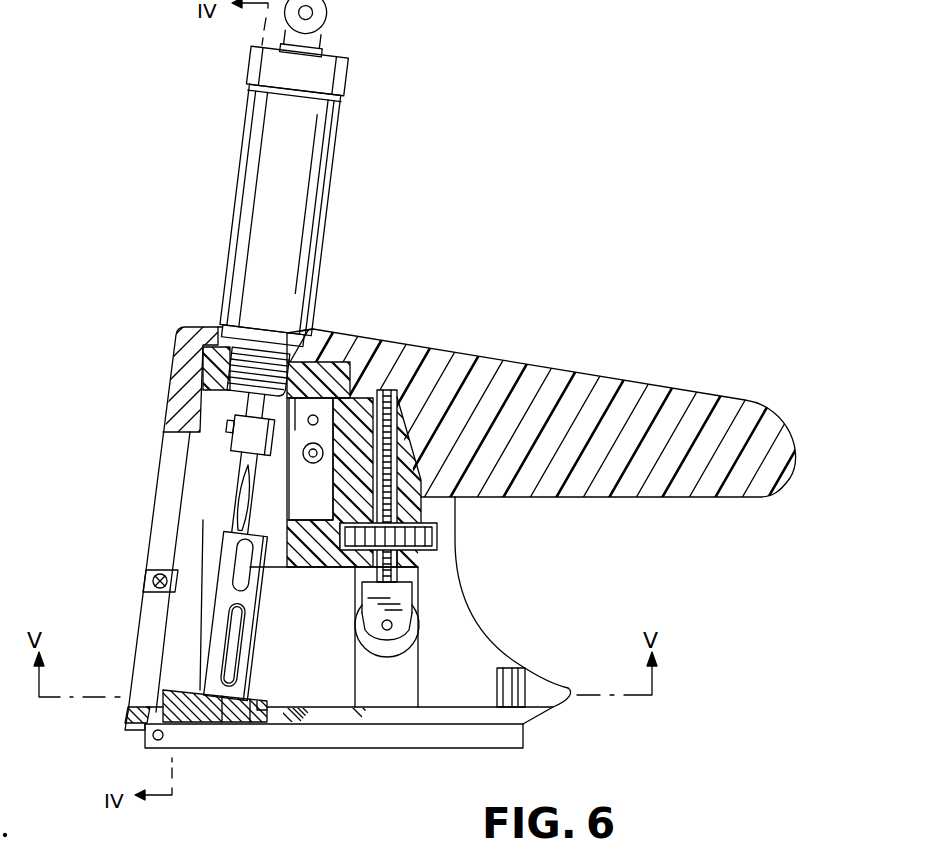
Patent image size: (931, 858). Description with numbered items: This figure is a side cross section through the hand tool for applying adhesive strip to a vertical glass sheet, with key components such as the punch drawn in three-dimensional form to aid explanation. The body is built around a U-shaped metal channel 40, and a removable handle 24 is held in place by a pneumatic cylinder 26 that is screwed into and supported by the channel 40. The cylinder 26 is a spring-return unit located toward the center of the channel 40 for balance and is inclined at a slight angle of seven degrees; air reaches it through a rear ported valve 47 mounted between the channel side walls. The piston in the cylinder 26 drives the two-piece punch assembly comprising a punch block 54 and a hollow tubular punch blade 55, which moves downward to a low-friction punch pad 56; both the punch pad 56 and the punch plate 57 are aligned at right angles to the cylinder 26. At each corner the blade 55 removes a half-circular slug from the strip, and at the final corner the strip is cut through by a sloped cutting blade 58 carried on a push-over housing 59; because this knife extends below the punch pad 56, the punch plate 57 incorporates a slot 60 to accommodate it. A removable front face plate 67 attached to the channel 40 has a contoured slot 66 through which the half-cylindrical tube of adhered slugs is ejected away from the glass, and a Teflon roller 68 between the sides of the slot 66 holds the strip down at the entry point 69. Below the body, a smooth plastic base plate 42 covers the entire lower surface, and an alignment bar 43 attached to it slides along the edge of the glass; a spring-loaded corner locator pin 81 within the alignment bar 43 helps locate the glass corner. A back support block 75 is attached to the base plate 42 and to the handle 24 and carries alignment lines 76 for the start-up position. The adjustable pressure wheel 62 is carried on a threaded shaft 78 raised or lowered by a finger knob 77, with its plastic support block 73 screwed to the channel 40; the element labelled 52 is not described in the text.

The removable handle 24 is at (560, 403).
The pneumatic cylinder 26 is at (296, 165).
The U-shaped metal channel 40 is at (318, 385).
The base plate 42 is at (535, 718).
The alignment bar 43 is at (442, 738).
The rear ported valve 47 is at (365, 405).
The support plate 52 is at (323, 677).
The punch block 54 is at (237, 440).
The punch blade 55 is at (230, 570).
The punch pad 56 is at (261, 707).
The punch plate 57 is at (229, 710).
The cutting blade 58 is at (227, 645).
The push-over housing 59 is at (245, 620).
The slot 60 is at (220, 717).
The pressure wheel 62 is at (427, 627).
The slot 66 is at (170, 491).
The front face plate 67 is at (180, 383).
The roller 68 is at (153, 581).
The entry point 69 is at (150, 642).
The plastic support block 73 is at (362, 395).
The back support block 75 is at (477, 650).
The alignment lines 76 is at (517, 667).
The finger knob 77 is at (430, 540).
The pressure-wheel threaded shaft 78 is at (397, 398).
The corner locator pin 81 is at (147, 737).